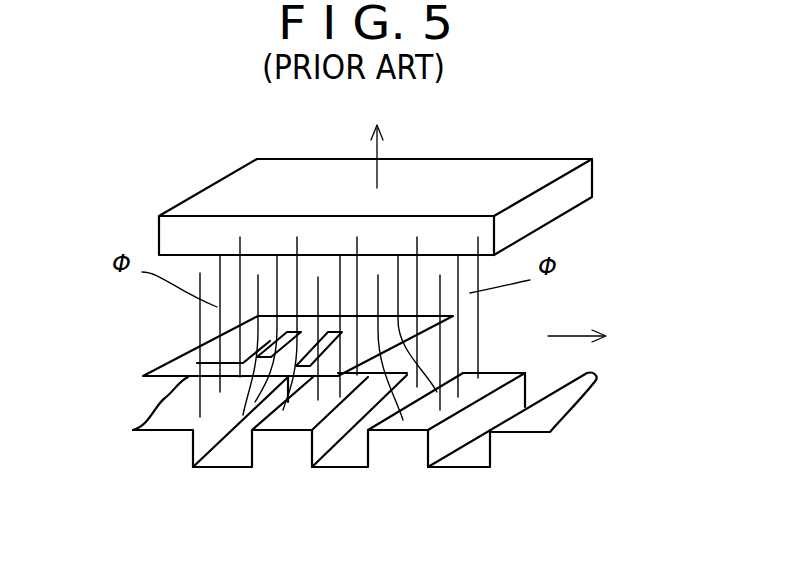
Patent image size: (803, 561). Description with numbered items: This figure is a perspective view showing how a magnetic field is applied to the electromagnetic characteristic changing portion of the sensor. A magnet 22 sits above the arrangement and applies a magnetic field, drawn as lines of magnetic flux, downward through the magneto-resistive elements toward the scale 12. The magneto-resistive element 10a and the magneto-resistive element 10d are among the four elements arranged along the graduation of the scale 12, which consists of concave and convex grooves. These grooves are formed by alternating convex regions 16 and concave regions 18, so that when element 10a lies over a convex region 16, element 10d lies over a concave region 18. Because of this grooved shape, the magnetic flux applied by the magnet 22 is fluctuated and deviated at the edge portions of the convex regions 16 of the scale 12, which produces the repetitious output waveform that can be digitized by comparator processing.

The magnet 22 is at (232, 192).
The magneto-resistive element 10a is at (262, 405).
The magneto-resistive element 10d is at (322, 370).
The scale 12 is at (124, 420).
The convex region 16 is at (296, 434).
The concave region 18 is at (228, 462).